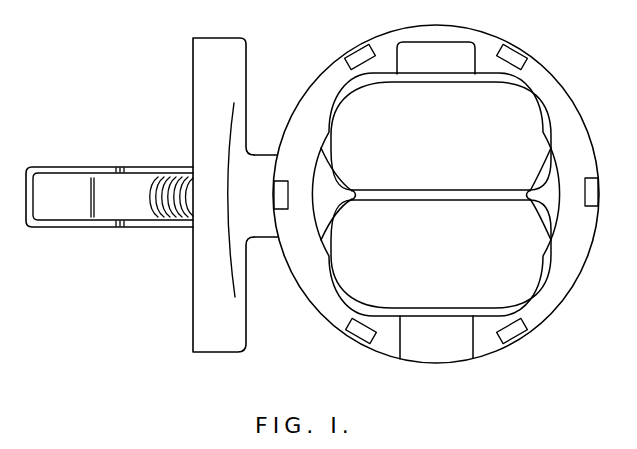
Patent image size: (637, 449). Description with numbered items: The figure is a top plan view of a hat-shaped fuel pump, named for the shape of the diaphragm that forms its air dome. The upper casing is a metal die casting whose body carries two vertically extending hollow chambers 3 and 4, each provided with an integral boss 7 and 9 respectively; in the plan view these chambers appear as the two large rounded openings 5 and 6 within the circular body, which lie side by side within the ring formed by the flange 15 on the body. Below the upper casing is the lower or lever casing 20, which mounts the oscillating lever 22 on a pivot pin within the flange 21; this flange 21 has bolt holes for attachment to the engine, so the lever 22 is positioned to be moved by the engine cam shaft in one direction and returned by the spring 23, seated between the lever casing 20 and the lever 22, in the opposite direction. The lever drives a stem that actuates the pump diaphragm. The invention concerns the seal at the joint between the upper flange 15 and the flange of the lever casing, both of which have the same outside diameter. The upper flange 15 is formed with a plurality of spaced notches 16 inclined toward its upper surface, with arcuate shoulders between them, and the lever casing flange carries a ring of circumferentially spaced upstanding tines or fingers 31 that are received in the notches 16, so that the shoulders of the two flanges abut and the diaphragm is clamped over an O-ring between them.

The hollow chamber 3 is at (547, 293).
The hollow chamber 4 is at (550, 116).
The upper cavity 5 is at (532, 143).
The lower cavity 6 is at (527, 272).
The boss 7 is at (469, 357).
The boss 9 is at (470, 44).
The flange 15 is at (578, 250).
The notches 16 is at (592, 210).
The lever casing 20 is at (271, 238).
The flange 21 is at (243, 341).
The oscillating lever 22 is at (158, 228).
The spring 23 is at (171, 181).
The tines or fingers 31 is at (592, 190).